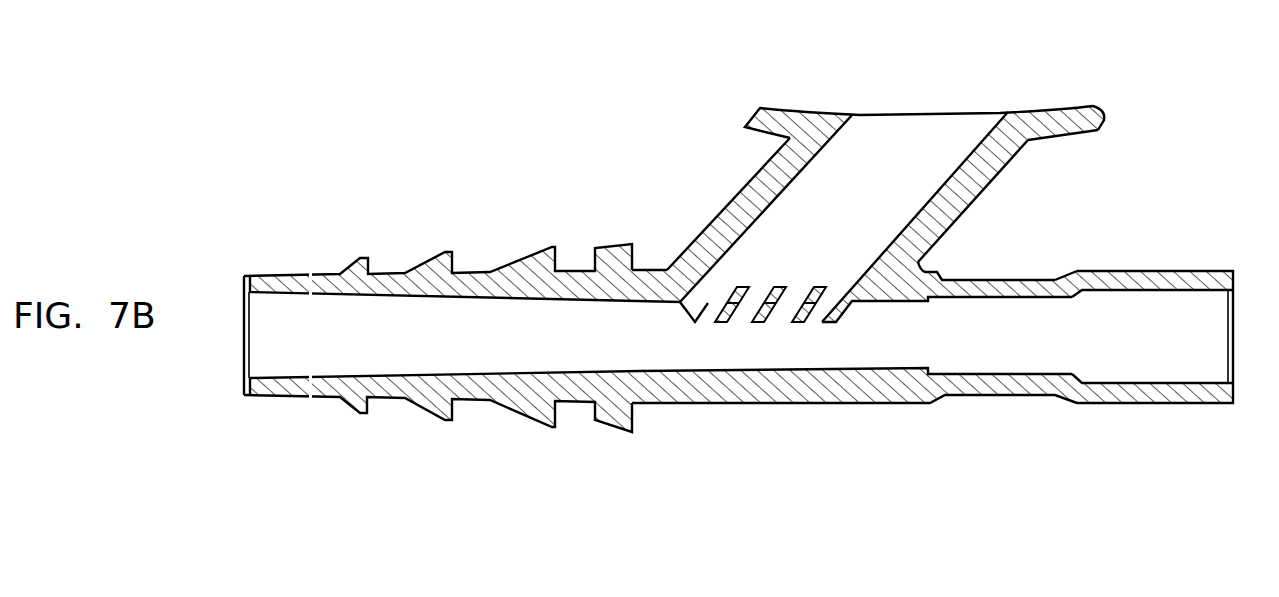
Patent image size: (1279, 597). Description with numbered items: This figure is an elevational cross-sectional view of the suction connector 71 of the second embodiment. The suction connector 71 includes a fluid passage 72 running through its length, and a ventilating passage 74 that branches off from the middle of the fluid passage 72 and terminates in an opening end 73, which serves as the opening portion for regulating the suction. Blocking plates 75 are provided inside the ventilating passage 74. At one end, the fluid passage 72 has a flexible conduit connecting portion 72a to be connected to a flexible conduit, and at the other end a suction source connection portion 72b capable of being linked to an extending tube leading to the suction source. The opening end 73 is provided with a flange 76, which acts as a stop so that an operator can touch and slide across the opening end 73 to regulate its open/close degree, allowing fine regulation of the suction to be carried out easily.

The suction connector 71 is at (568, 221).
The fluid passage 72 is at (1123, 323).
The flexible conduit connecting portion 72a is at (1163, 393).
The suction source connection portion 72b is at (418, 398).
The opening end 73 is at (925, 114).
The ventilating passage 74 is at (793, 203).
The blocking plates 75 is at (772, 297).
The flange 76 is at (1087, 114).